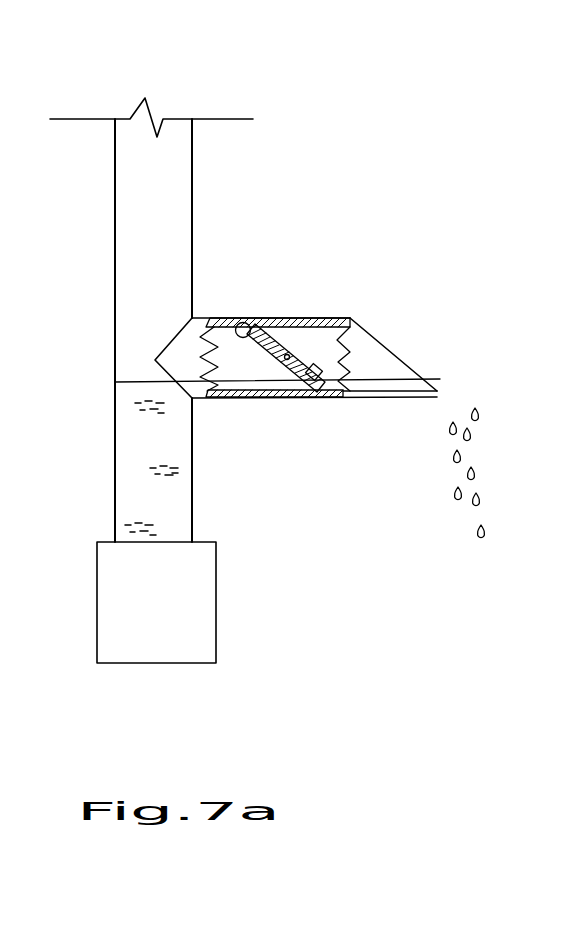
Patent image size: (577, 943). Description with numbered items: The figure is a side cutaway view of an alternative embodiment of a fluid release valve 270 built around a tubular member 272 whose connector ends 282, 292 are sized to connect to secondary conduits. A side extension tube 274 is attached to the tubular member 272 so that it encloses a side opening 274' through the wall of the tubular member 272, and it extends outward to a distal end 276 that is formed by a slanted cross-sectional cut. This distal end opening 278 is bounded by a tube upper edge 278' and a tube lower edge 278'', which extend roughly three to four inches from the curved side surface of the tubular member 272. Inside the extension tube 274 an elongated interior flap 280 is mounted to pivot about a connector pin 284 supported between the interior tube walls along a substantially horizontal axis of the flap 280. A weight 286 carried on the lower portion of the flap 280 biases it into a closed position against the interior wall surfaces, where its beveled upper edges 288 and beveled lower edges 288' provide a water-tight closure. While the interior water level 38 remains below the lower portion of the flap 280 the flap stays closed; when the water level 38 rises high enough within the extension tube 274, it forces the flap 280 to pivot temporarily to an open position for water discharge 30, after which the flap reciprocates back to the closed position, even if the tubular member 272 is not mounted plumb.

The water discharge 30 is at (474, 478).
The interior water level 38 is at (138, 382).
The fluid release valve 270 is at (416, 158).
The tubular member 272 is at (125, 175).
The side extension tube 274 is at (278, 274).
The side opening 274' is at (271, 277).
The distal end 276 is at (447, 350).
The distal end opening 278 is at (407, 325).
The tube upper edge 278' is at (393, 315).
The tube lower edge 278'' is at (319, 445).
The interior flap 280 is at (258, 362).
The connector end 282 is at (137, 663).
The connector pin 284 is at (290, 385).
The weight 286 is at (325, 368).
The beveled upper edges 288 is at (279, 262).
The beveled lower edges 288' is at (274, 447).
The connector end 292 is at (128, 126).